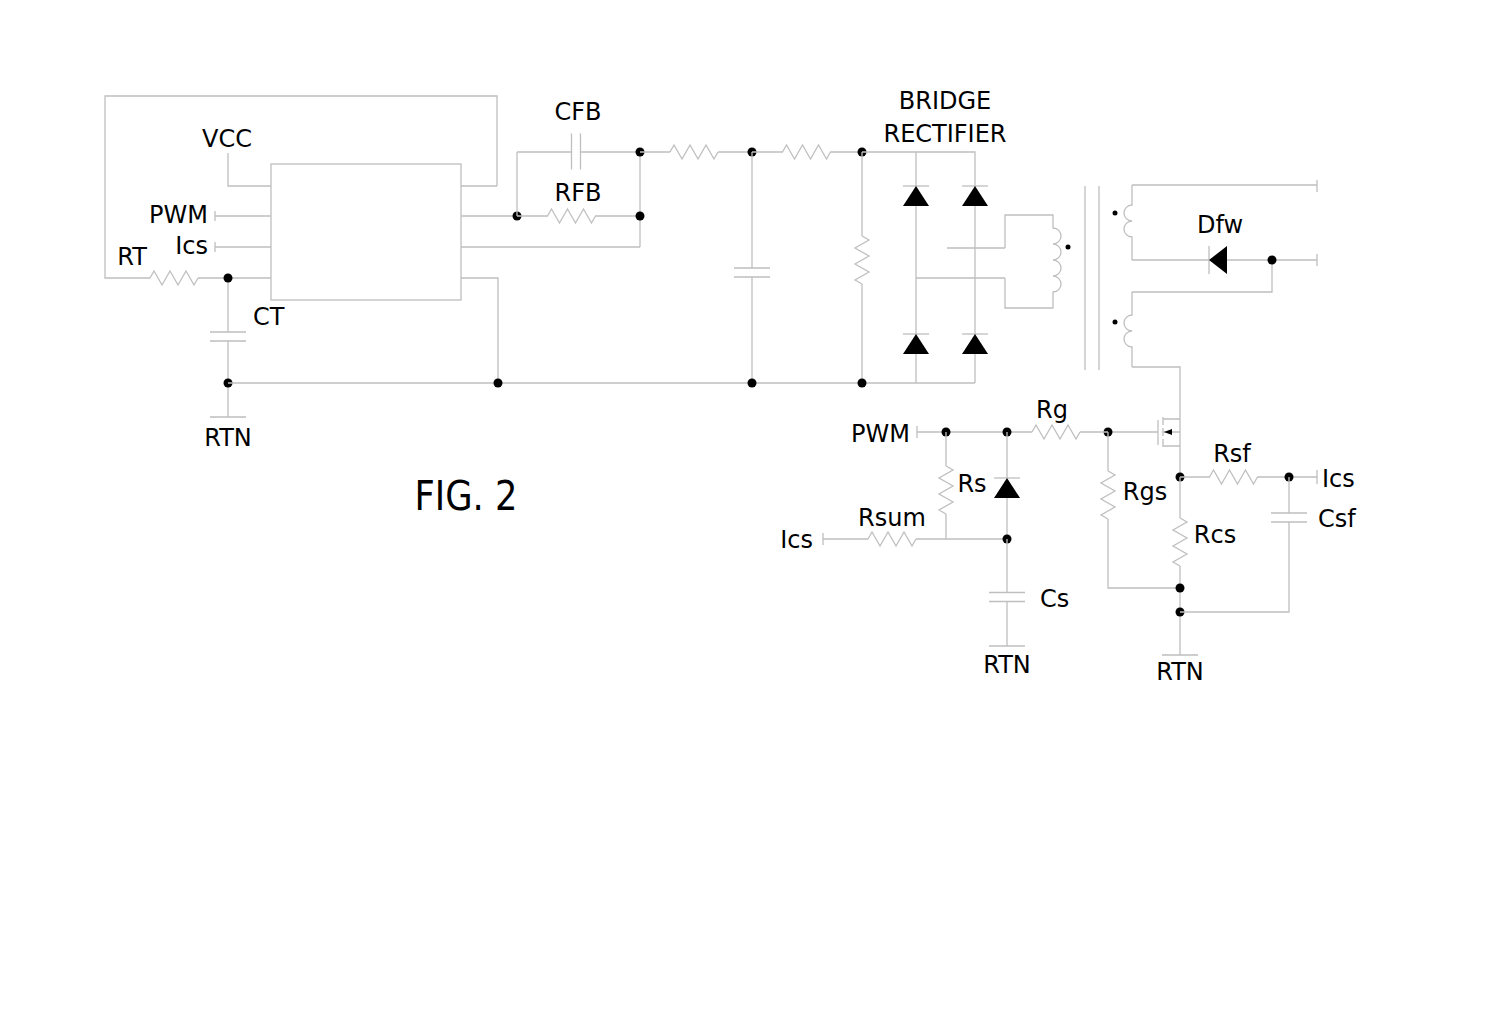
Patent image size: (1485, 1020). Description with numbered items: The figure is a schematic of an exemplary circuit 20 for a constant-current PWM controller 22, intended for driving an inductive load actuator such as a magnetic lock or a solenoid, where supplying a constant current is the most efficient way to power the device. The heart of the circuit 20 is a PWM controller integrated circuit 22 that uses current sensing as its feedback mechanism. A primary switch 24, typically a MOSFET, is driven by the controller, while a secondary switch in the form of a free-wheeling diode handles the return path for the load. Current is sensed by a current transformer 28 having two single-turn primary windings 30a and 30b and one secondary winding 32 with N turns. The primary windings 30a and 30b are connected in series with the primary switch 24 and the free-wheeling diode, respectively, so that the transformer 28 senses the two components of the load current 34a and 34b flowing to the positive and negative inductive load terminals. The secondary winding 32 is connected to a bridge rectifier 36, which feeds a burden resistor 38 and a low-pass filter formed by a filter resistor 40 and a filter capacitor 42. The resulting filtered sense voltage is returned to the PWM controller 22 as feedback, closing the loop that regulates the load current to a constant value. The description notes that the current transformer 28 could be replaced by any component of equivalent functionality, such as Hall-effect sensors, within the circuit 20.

The circuit 20 is at (1080, 120).
The PWM controller integrated circuit 22 is at (271, 164).
The primary switch 24 is at (1180, 410).
The current transformer 28 is at (1085, 197).
The primary winding 30a is at (1132, 197).
The primary winding 30b is at (1132, 360).
The secondary winding 32 is at (1067, 302).
The load current component 34a is at (1350, 153).
The load current component 34b is at (1343, 290).
The bridge rectifier 36 is at (865, 150).
The burden resistor 38 is at (855, 268).
The low-pass filter resistor 40 is at (717, 146).
The low-pass filter capacitor 42 is at (748, 278).